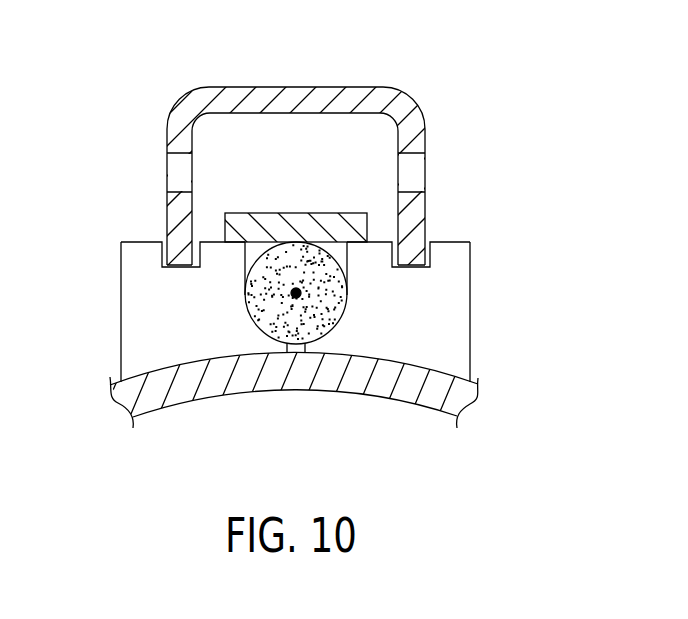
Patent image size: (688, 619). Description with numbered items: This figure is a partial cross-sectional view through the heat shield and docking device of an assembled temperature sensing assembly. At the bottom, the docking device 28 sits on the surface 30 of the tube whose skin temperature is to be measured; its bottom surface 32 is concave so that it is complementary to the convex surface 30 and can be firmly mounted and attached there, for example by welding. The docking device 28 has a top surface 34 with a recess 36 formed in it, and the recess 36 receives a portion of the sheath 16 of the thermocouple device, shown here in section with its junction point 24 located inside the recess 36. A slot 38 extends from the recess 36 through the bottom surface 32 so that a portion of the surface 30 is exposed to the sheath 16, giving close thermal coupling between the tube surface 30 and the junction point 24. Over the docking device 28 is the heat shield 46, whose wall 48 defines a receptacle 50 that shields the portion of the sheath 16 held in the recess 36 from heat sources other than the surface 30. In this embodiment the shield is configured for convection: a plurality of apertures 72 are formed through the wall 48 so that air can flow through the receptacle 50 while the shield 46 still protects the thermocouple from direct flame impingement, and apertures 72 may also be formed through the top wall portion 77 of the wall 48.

The heat shield 46 is at (311, 146).
The wall 48 is at (182, 100).
The receptacle 50 is at (238, 128).
The top wall portion 77 is at (345, 102).
The apertures 72 is at (177, 173).
The recess 36 is at (334, 244).
The top surface 34 is at (452, 242).
The docking device 28 is at (336, 292).
The sheath 16 is at (262, 287).
The junction point 24 is at (294, 295).
The slot 38 is at (290, 353).
The bottom surface 32 is at (443, 364).
The surface 30 is at (393, 400).